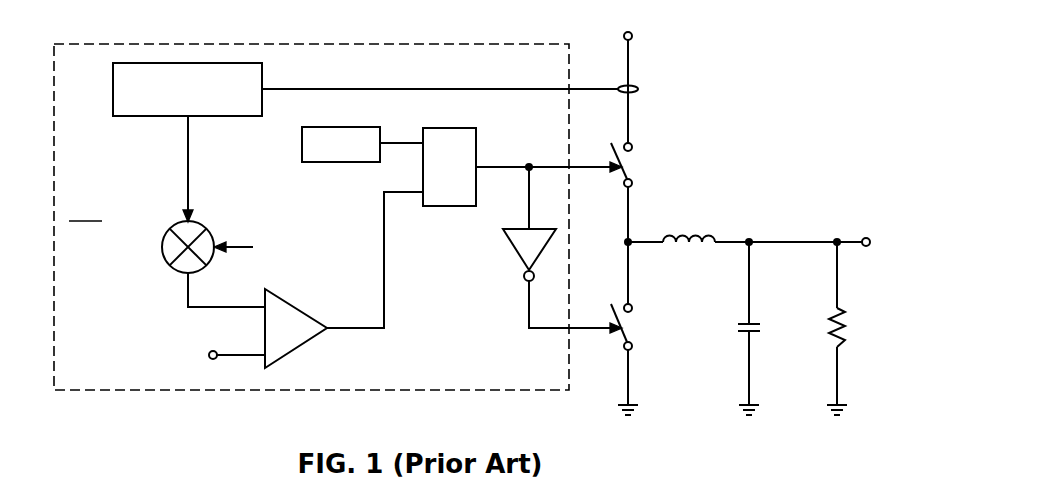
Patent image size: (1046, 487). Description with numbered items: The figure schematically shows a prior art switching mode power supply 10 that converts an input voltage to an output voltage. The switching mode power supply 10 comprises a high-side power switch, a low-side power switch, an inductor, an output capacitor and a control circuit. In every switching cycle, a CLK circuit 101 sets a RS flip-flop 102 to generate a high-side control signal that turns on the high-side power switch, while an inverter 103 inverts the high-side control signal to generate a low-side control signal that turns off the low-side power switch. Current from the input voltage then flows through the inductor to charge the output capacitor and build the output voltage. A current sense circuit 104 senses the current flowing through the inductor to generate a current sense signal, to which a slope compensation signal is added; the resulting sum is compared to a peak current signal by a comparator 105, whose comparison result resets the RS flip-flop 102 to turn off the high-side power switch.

The switching mode power supply 10 is at (817, 57).
The CLK circuit 101 is at (317, 164).
The RS flip-flop 102 is at (477, 143).
The inverter 103 is at (513, 248).
The current sense circuit 104 is at (113, 102).
The comparator 105 is at (313, 343).